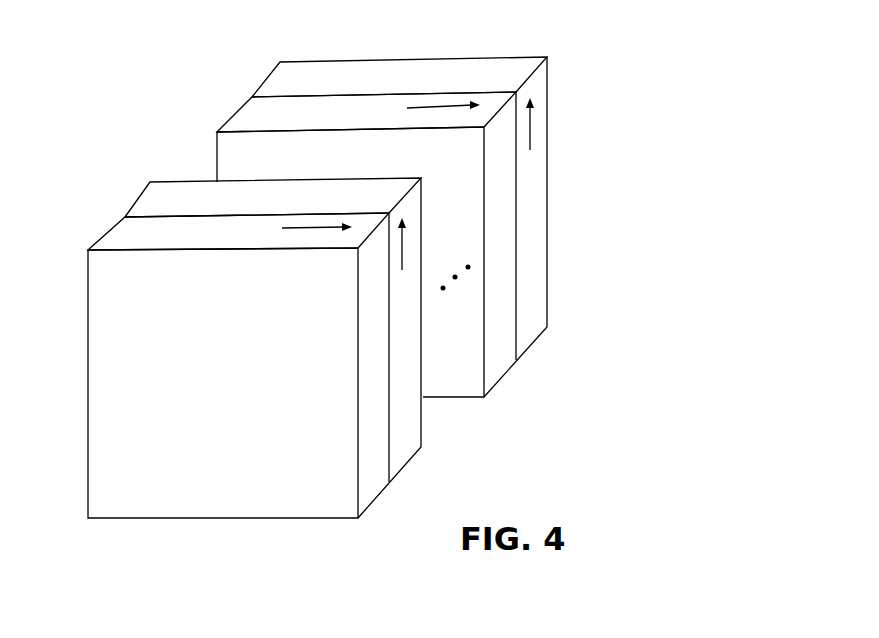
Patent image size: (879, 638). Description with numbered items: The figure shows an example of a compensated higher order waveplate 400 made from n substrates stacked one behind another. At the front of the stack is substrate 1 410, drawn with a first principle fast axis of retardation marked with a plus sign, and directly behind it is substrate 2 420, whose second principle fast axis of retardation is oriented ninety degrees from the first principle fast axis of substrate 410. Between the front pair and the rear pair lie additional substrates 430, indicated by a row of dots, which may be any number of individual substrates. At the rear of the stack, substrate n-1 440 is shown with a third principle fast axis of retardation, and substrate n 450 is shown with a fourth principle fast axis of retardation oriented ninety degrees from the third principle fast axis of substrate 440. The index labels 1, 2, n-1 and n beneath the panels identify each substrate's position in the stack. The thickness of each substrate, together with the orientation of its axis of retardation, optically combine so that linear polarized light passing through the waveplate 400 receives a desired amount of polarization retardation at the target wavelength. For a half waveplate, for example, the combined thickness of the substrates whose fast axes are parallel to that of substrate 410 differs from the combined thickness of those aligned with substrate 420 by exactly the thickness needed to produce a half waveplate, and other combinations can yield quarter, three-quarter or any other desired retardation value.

The compensated higher order waveplate 400 is at (126, 97).
The substrate 1 410 is at (110, 238).
The substrate 2 420 is at (137, 203).
The additional substrates 430 is at (185, 157).
The substrate n−1 440 is at (240, 116).
The substrate n 450 is at (267, 80).
The substrate 1 index 1 is at (377, 460).
The substrate 2 index 2 is at (408, 437).
The substrate n−1 index n-1 is at (497, 342).
The substrate n index n is at (528, 320).